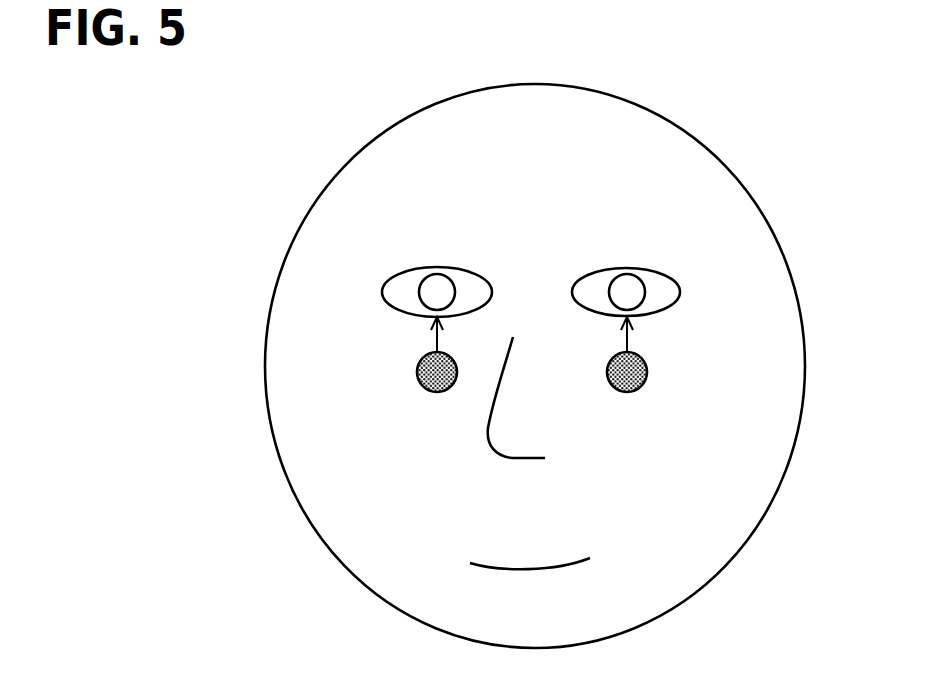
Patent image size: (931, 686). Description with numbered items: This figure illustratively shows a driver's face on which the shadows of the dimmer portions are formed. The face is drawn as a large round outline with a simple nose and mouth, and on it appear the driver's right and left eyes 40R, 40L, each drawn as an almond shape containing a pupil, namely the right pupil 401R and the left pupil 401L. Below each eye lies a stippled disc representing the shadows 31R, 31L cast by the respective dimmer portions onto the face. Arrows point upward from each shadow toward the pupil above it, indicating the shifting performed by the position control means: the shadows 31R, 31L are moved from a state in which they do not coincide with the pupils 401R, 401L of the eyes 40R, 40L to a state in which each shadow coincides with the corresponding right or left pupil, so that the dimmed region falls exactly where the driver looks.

The right eye 40R is at (395, 312).
The left eye 40L is at (668, 313).
The right pupil 401R is at (421, 287).
The left pupil 401L is at (643, 287).
The shadow of dimmer portion 31R is at (434, 393).
The shadow of dimmer portion 31L is at (638, 388).